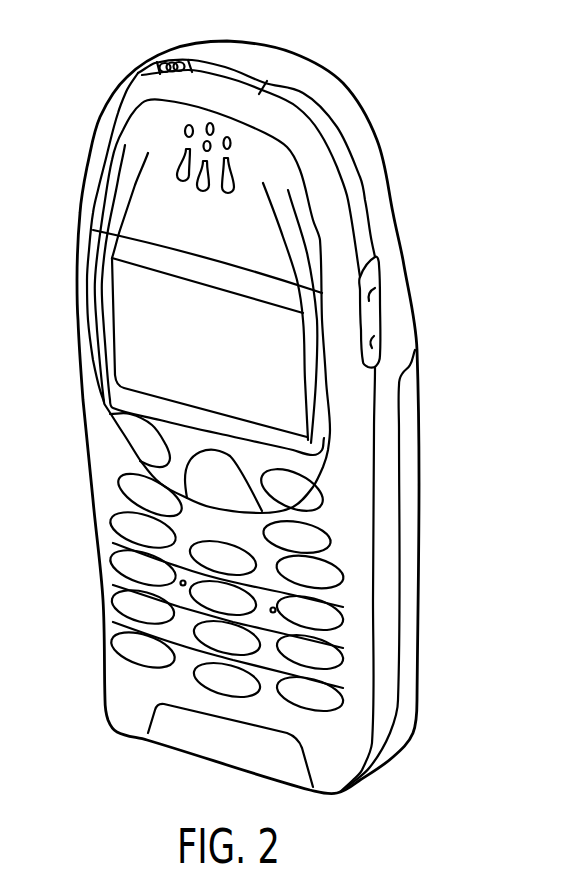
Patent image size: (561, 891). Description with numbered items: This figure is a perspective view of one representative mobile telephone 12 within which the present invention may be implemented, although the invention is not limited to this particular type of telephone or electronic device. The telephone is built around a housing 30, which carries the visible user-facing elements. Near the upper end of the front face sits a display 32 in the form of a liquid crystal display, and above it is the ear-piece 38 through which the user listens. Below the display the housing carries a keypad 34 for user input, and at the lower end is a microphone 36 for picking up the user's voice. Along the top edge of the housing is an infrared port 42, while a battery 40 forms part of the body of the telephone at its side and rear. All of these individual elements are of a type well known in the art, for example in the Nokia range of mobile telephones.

The mobile telephone 12 is at (355, 50).
The housing 30 is at (380, 193).
The display 32 is at (300, 392).
The keypad 34 is at (310, 700).
The microphone 36 is at (170, 735).
The ear-piece 38 is at (193, 153).
The battery 40 is at (410, 680).
The infrared port 42 is at (228, 72).